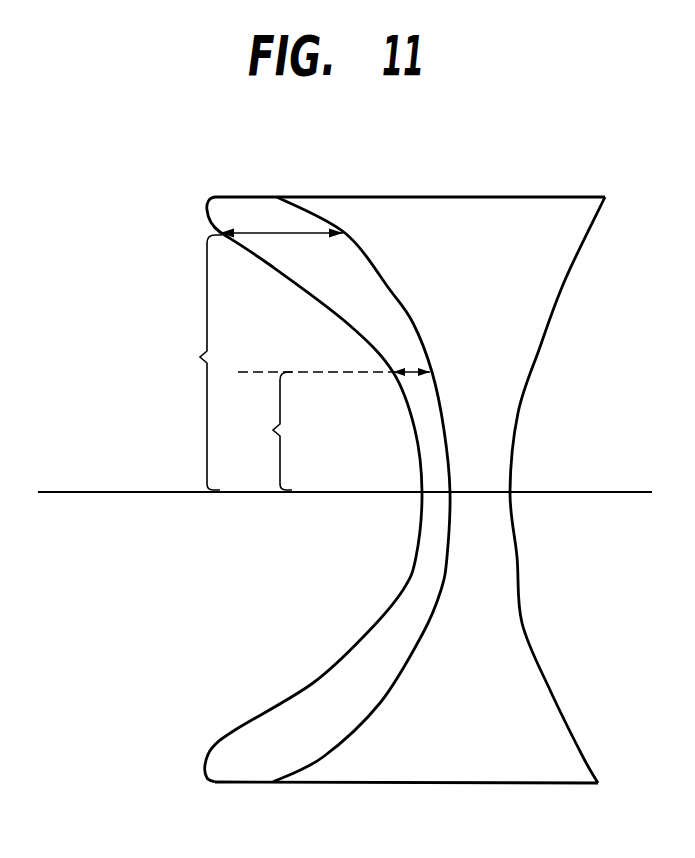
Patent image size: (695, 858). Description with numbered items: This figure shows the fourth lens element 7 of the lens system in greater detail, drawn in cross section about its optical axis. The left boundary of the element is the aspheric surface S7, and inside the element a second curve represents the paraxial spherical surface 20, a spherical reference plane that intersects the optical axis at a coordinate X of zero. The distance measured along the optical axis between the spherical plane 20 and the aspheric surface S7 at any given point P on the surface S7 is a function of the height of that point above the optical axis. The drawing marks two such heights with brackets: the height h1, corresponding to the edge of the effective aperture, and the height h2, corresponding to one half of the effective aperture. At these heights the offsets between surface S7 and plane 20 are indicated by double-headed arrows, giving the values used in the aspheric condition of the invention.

The fourth lens element 7 is at (405, 205).
The aspheric surface S7 is at (313, 683).
The paraxial spherical surface 20 is at (380, 703).
The point P is at (220, 232).
The height at the edge of the effective aperture h1 is at (195, 362).
The height at one half of the effective aperture h2 is at (267, 431).